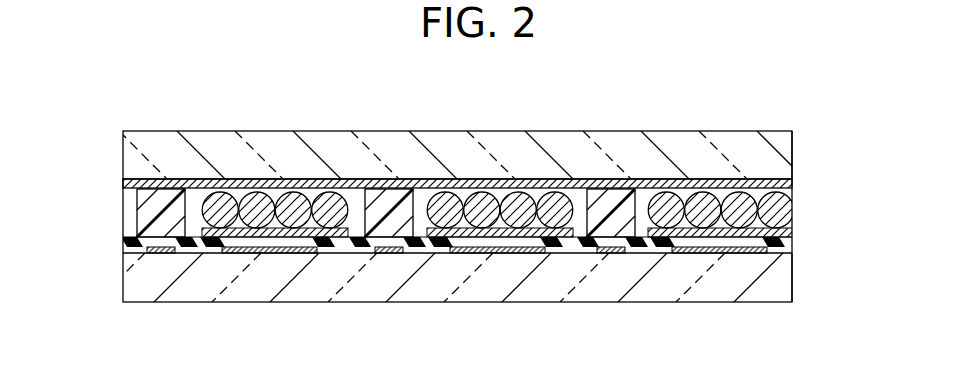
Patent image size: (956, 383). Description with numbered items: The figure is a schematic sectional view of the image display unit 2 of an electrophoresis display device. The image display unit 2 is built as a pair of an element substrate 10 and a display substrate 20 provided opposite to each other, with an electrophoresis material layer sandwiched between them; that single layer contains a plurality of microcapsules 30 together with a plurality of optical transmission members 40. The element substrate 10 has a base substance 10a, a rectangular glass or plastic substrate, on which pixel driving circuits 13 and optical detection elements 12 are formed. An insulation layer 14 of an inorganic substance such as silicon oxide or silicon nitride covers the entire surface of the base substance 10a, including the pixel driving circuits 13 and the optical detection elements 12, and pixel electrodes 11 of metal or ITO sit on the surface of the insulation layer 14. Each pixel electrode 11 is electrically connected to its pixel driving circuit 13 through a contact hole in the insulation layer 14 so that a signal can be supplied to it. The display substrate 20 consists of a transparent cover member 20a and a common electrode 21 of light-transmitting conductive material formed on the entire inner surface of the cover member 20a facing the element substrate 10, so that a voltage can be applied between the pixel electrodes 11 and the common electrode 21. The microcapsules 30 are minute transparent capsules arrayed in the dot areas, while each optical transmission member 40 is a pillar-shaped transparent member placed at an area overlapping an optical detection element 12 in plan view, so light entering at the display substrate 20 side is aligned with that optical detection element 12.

The image display unit 2 is at (742, 104).
The element substrate 10 is at (105, 301).
The base substance 10a is at (790, 272).
The pixel electrode 11 is at (668, 238).
The optical detection element 12 is at (387, 253).
The pixel driving circuit 13 is at (500, 253).
The insulation layer 14 is at (130, 245).
The display substrate 20 is at (110, 146).
The cover member 20a is at (790, 153).
The common electrode 21 is at (293, 178).
The microcapsule 30 is at (783, 210).
The optical transmission member 40 is at (137, 207).